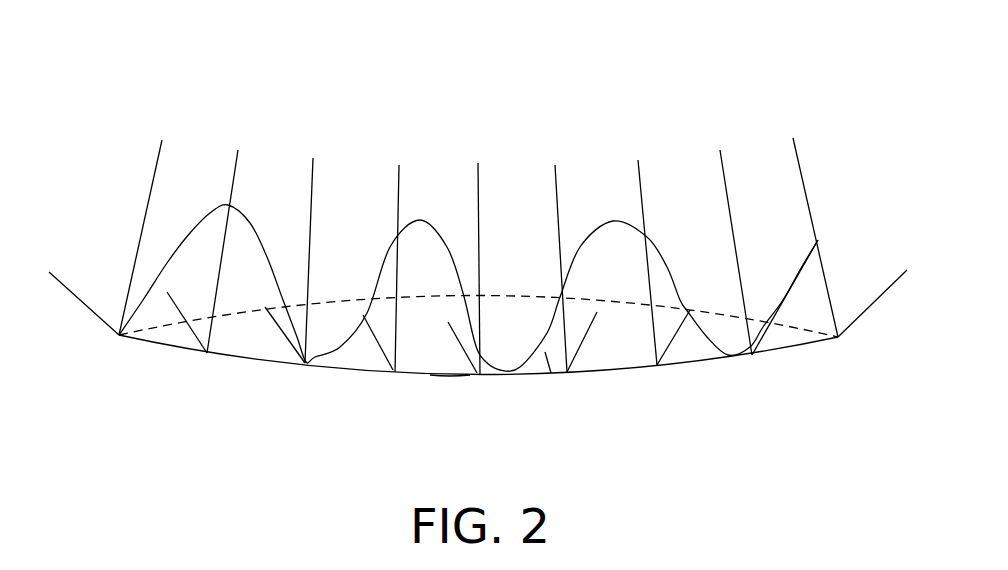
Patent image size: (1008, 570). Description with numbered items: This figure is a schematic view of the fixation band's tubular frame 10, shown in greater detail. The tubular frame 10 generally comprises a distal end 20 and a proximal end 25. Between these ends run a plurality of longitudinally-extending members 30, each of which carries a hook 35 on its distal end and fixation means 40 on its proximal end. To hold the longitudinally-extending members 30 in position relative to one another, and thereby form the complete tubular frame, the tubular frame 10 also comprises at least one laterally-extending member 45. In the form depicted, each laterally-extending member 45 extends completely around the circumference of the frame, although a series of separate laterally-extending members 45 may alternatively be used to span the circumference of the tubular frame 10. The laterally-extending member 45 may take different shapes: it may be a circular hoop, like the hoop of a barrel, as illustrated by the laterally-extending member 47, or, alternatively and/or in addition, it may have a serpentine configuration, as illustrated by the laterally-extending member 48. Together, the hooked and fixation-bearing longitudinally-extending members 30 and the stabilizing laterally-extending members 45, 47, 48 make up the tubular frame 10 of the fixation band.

The tubular frame 10 is at (148, 437).
The distal end 20 is at (147, 357).
The proximal end 25 is at (218, 133).
The longitudinally-extending member 30 is at (310, 217).
The hook 35 is at (382, 358).
The fixation means 40 is at (557, 187).
The laterally-extending member 45 is at (498, 382).
The laterally-extending member in the form of a circular hoop 47 is at (425, 375).
The laterally-extending member having a serpentine configuration 48 is at (450, 377).